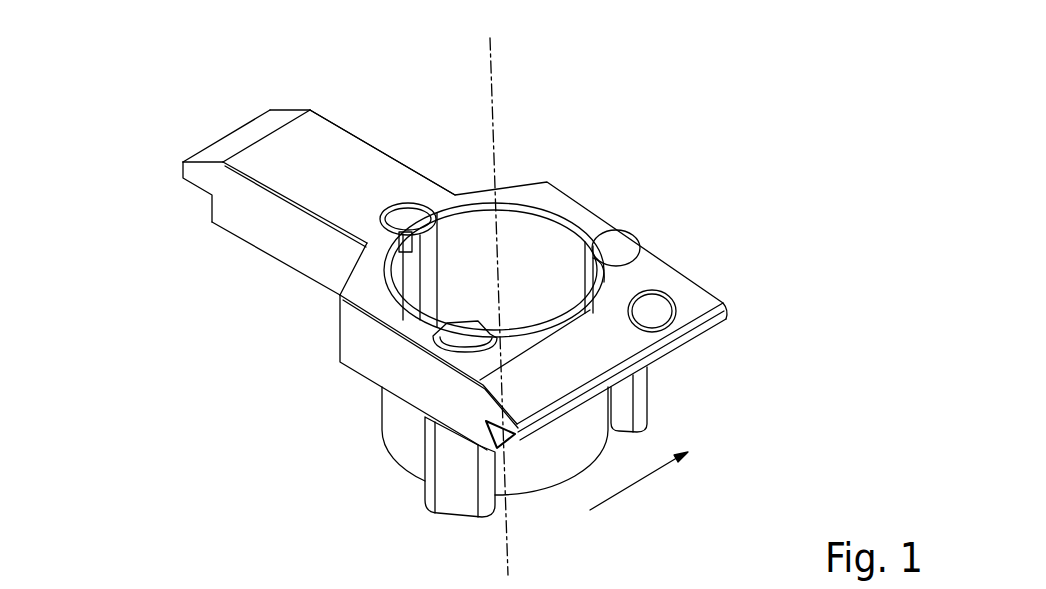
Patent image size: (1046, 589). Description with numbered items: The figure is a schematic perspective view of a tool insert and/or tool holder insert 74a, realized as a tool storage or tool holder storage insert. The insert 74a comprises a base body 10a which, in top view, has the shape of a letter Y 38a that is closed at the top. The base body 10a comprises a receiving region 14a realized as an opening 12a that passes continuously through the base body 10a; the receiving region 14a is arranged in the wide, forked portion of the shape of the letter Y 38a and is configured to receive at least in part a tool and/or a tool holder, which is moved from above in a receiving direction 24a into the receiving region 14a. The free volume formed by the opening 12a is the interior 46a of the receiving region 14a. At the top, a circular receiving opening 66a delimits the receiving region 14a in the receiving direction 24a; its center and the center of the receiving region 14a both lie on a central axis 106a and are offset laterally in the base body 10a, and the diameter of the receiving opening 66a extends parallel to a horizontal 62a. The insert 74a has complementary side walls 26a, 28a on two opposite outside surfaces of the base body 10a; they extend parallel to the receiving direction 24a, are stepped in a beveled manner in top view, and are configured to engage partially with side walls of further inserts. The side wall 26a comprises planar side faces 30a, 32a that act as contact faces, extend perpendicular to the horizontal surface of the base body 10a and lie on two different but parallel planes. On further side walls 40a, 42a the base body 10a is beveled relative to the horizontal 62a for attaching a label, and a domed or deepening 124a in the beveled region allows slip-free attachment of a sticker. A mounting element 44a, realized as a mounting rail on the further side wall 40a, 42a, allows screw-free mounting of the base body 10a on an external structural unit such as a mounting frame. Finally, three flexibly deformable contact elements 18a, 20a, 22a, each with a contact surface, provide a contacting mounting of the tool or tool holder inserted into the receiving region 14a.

The base body 10a is at (372, 178).
The opening 12a is at (485, 244).
The receiving region 14a is at (502, 206).
The contact element 18a is at (413, 216).
The contact element 20a is at (680, 242).
The contact element 22a is at (462, 352).
The receiving direction 24a is at (526, 273).
The side wall 26a is at (279, 250).
The side wall 28a is at (688, 249).
The side face 30a is at (247, 207).
The side face 32a is at (366, 353).
The shape of a letter Y closed at the top 38a is at (320, 100).
The further side wall 40a is at (716, 366).
The further side wall 42a is at (206, 132).
The mounting element 44a is at (497, 437).
The interior 46a is at (620, 242).
The horizontal 62a is at (640, 487).
The receiving opening 66a is at (459, 259).
The tool insert and/or tool holder insert 74a is at (263, 100).
The central axis 106a is at (495, 55).
The domed or deepening 124a is at (664, 311).